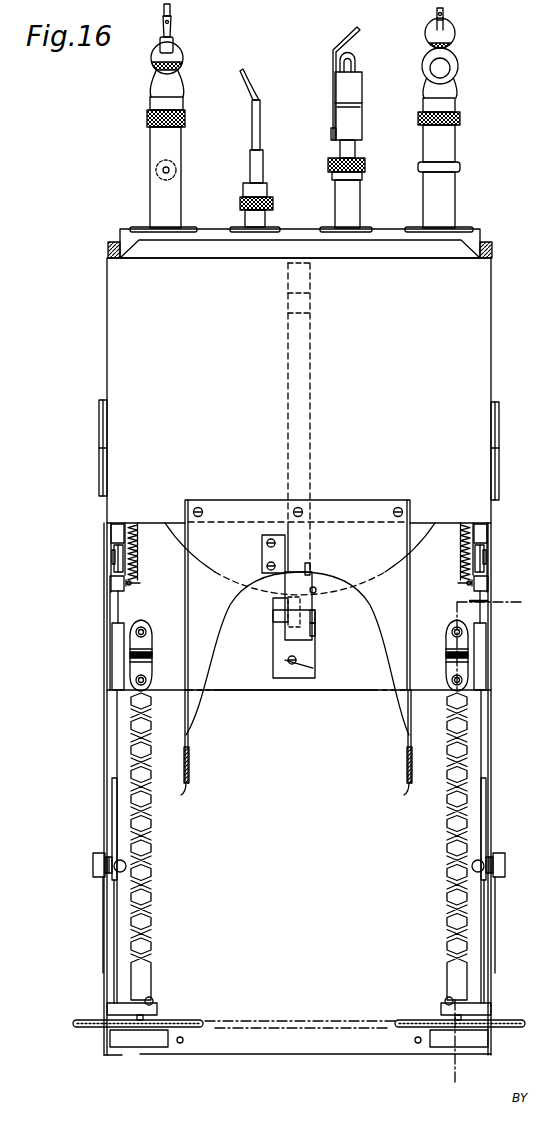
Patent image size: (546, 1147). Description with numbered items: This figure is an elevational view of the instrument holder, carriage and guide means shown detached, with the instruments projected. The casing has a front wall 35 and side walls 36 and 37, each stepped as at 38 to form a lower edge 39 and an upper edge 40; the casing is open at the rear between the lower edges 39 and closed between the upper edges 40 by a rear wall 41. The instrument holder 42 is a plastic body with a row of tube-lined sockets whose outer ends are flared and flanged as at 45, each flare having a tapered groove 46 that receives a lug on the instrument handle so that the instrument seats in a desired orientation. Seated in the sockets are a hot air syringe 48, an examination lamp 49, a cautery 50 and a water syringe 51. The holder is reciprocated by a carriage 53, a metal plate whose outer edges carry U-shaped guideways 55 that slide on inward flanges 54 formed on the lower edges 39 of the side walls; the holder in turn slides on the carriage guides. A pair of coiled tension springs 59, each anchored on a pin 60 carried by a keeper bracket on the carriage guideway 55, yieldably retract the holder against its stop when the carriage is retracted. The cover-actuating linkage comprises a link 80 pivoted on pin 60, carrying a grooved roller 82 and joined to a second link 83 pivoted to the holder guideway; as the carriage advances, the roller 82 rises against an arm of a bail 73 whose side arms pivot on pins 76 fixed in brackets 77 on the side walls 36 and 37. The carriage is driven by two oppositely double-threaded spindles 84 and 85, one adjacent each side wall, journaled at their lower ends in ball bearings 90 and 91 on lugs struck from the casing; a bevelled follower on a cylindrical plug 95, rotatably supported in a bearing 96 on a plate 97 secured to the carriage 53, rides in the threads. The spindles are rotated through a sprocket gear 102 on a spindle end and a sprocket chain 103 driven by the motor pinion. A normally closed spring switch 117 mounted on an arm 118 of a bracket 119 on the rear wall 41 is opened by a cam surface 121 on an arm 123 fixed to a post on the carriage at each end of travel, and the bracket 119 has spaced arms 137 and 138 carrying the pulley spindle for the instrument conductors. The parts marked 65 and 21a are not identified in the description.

The front wall 35 is at (357, 1056).
The side wall 36 is at (491, 806).
The side wall 37 is at (107, 762).
The step 38 is at (107, 536).
The lower edge 39 is at (107, 604).
The upper edge 40 is at (107, 352).
The rear wall 41 is at (122, 384).
The instrument holder 42 is at (481, 238).
The flange 45 is at (187, 227).
The tapered channel or groove 46 is at (543, 404).
The hot air syringe 48 is at (459, 38).
The examination lamp 49 is at (358, 62).
The cautery 50 is at (262, 78).
The water syringe 51 is at (181, 58).
The carriage 53 is at (251, 682).
The flange 54 is at (113, 918).
The guideway 55 is at (112, 660).
The coiled tension spring 59 is at (136, 560).
The pin 60 is at (133, 584).
The end block 65 is at (108, 250).
The bail 73 is at (112, 829).
The pin 76 is at (93, 865).
The bracket 77 is at (103, 900).
The link 80 is at (120, 591).
The grooved roller 82 is at (116, 558).
The link 83 is at (112, 525).
The threaded spindle 84 is at (444, 922).
The threaded spindle 85 is at (154, 920).
The ball bearing 90 is at (478, 1013).
The ball bearing 91 is at (160, 1009).
The cylindrical plug 95 is at (150, 655).
The bearing 96 is at (148, 663).
The plate 97 is at (146, 635).
The sprocket gear 102 is at (100, 1027).
The sprocket chain 103 is at (273, 1020).
The switch 117 is at (314, 580).
The arm 118 is at (262, 560).
The bracket 119 is at (320, 638).
The cam surface 121 is at (312, 305).
The arm 123 is at (312, 385).
The arm 137 is at (362, 800).
The arm 138 is at (184, 799).
The center axis 21a is at (530, 603).